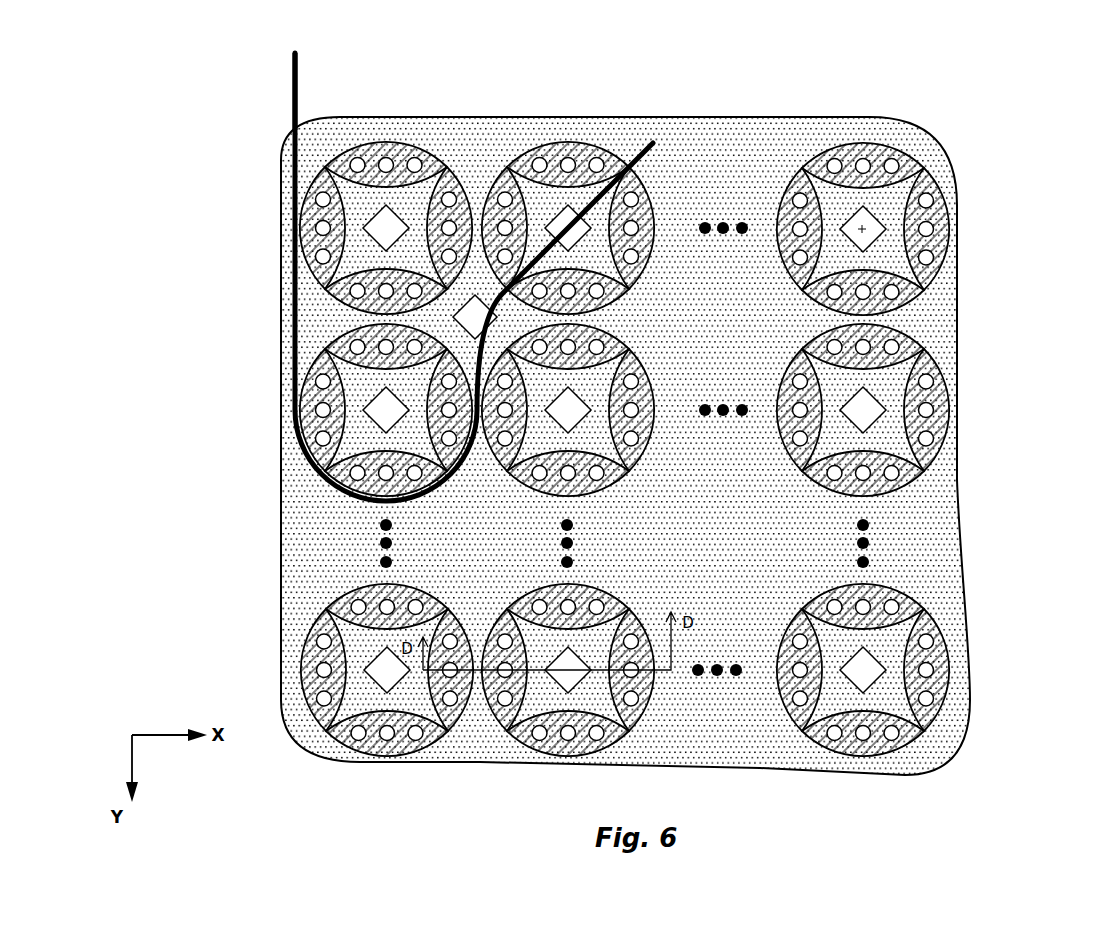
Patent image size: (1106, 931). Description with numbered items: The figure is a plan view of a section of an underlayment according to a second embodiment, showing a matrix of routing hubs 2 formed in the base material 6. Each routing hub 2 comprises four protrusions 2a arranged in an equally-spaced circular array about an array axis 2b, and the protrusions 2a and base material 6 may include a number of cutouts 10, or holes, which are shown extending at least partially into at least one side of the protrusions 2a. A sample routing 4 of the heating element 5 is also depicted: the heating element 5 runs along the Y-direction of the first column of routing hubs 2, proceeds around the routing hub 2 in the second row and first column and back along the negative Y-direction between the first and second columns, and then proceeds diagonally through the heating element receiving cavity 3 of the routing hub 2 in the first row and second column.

The routing hub 2 is at (978, 757).
The protrusion 2a is at (860, 147).
The array axis 2b is at (872, 229).
The heating element receiving cavity 3 is at (812, 180).
The sample routing 4 is at (292, 310).
The heating element 5 is at (292, 87).
The base material 6 is at (930, 552).
The cutout 10 is at (897, 157).